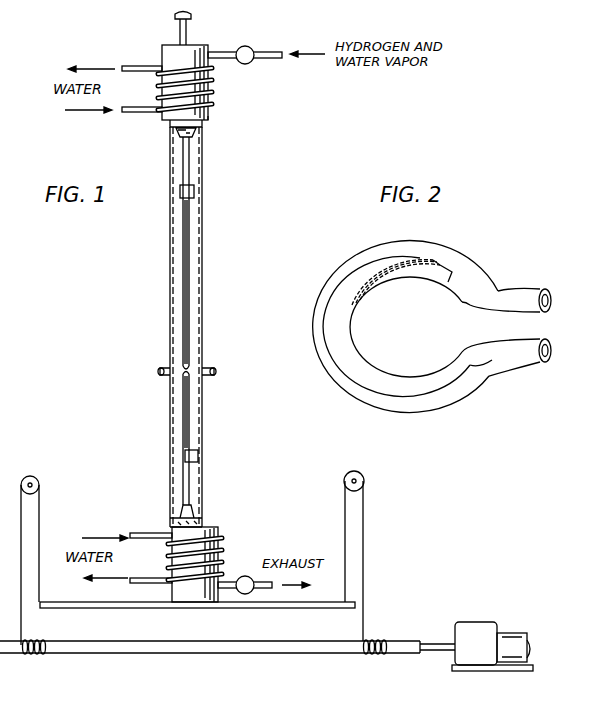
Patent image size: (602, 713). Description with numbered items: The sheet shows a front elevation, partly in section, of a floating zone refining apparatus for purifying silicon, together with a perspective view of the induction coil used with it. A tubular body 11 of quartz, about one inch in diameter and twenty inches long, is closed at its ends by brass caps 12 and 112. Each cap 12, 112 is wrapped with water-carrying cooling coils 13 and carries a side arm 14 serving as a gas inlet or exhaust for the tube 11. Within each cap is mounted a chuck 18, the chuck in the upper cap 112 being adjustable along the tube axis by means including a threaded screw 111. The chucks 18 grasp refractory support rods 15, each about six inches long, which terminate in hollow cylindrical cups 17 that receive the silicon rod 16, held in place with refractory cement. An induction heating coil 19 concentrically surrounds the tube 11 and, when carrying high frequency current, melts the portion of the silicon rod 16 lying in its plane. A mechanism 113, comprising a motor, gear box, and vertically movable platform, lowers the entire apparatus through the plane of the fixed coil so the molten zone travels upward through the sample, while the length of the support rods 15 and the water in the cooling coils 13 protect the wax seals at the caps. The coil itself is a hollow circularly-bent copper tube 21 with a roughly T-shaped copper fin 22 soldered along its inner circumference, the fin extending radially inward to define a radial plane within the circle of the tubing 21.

In FIG. 1, the tubular body 11 is at (203, 254).
In FIG. 1, the cap 12 is at (170, 591).
In FIG. 1, the cooling coils 13 is at (140, 64).
In FIG. 1, the side arm 14 is at (232, 50).
In FIG. 1, the support rods 15 is at (190, 165).
In FIG. 1, the silicon rod 16 is at (190, 224).
In FIG. 1, the hollow cylindrical cups 17 is at (194, 191).
In FIG. 1, the chuck 18 is at (196, 132).
In FIG. 1, the induction heating coil 19 is at (213, 370).
In FIG. 2, the circularly-bent tube 21 is at (527, 286).
In FIG. 2, the fin 22 is at (378, 292).
In FIG. 1, the threaded screw 111 is at (188, 34).
In FIG. 1, the cap 112 is at (209, 118).
In FIG. 1, the mechanism 113 is at (489, 618).